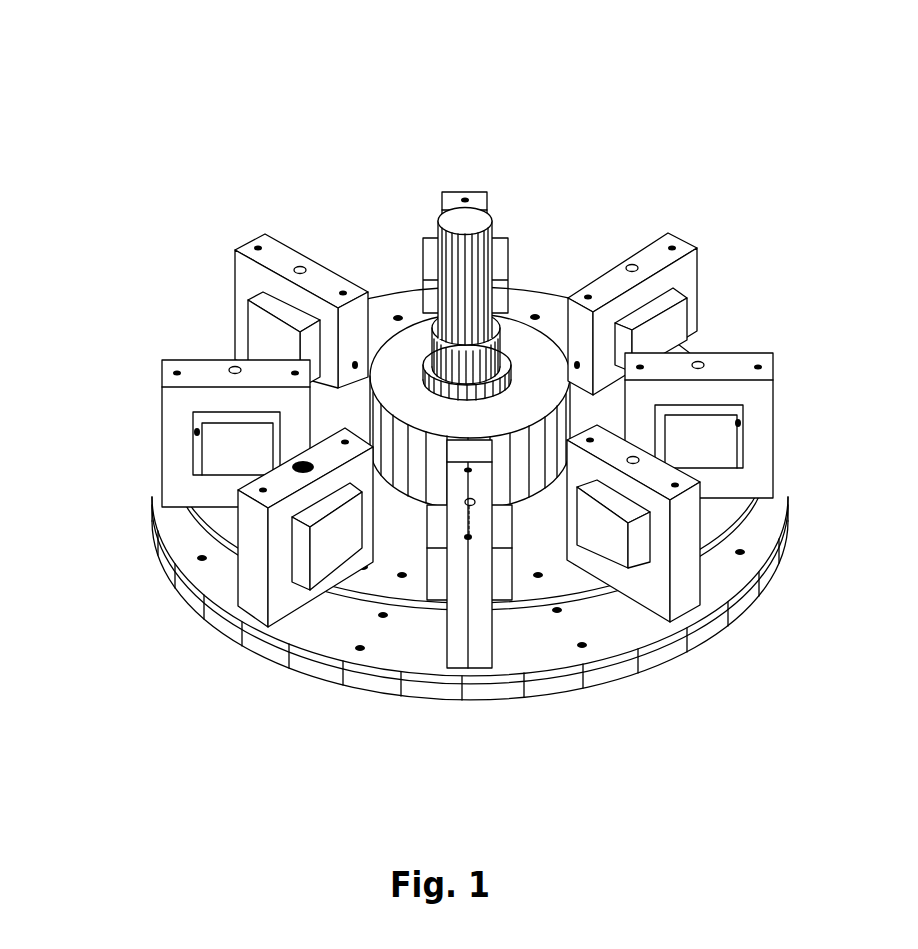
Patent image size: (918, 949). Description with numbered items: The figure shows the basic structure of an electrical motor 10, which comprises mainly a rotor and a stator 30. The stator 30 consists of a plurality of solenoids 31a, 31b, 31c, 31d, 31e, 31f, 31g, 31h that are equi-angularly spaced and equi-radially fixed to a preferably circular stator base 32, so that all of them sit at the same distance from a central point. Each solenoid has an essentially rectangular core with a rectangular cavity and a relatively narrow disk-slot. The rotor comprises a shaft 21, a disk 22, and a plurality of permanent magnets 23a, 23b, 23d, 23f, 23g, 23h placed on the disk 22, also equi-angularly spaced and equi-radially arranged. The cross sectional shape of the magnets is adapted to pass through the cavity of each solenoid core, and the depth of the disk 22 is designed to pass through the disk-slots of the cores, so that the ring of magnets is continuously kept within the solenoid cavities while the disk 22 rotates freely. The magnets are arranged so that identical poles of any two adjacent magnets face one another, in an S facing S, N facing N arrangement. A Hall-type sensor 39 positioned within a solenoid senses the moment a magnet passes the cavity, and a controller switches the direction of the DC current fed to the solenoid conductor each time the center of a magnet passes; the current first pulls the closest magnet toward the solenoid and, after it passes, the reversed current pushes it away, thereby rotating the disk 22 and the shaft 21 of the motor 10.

The electrical motor 10 is at (163, 88).
The shaft 21 is at (450, 261).
The disk 22 is at (385, 583).
The permanent magnet 23a is at (507, 562).
The permanent magnet 23b is at (613, 532).
The permanent magnet 23d is at (651, 330).
The permanent magnet 23f is at (246, 300).
The permanent magnet 23g is at (218, 449).
The permanent magnet 23h is at (327, 547).
The stator 30 is at (632, 673).
The solenoid 31a is at (477, 655).
The solenoid 31b is at (690, 593).
The solenoid 31c is at (735, 365).
The solenoid 31d is at (640, 262).
The solenoid 31e is at (447, 192).
The solenoid 31f is at (265, 235).
The solenoid 31g is at (175, 362).
The solenoid 31h is at (238, 502).
The stator base 32 is at (322, 633).
The Hall-type sensor 39 is at (468, 672).